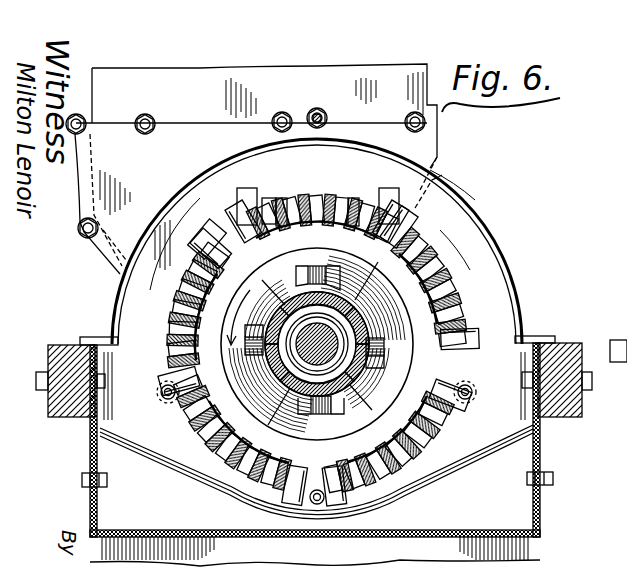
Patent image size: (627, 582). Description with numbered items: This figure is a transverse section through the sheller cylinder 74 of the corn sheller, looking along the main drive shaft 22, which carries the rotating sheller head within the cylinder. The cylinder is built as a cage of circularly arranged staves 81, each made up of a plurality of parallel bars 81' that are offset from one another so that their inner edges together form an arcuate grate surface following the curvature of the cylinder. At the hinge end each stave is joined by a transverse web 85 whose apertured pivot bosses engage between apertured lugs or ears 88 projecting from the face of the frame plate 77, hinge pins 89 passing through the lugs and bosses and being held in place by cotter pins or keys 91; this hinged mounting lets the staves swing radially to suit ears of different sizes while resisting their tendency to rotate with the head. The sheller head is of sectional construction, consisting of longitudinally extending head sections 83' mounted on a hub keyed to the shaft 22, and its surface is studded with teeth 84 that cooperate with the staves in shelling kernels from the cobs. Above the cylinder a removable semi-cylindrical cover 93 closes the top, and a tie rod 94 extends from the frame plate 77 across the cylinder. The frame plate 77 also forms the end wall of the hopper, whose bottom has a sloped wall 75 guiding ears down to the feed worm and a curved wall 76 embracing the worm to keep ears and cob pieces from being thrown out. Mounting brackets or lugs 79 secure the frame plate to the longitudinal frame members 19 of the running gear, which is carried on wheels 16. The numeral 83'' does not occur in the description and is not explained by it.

The wheels 16 is at (618, 412).
The longitudinally extending frame members 19 is at (67, 418).
The main drive shaft 22 is at (283, 328).
The sheller cylinder 74 is at (430, 380).
The sloped hopper wall 75 is at (120, 262).
The curved hopper wall 76 is at (418, 215).
The frame plate 77 is at (467, 256).
The mounting brackets or lugs 79 is at (85, 340).
The staves 81 is at (290, 337).
The parallel bars 81' is at (250, 325).
The head sections 83' is at (331, 332).
The rotor segment 83'' is at (317, 351).
The teeth 84 is at (311, 278).
The transverse web 85 is at (280, 196).
The apertured lugs or ears 88 is at (248, 200).
The hinge pins 89 is at (236, 222).
The cotter pins or keys 91 is at (202, 192).
The semi-cylindrical cover 93 is at (472, 218).
The tie rod 94 is at (317, 110).